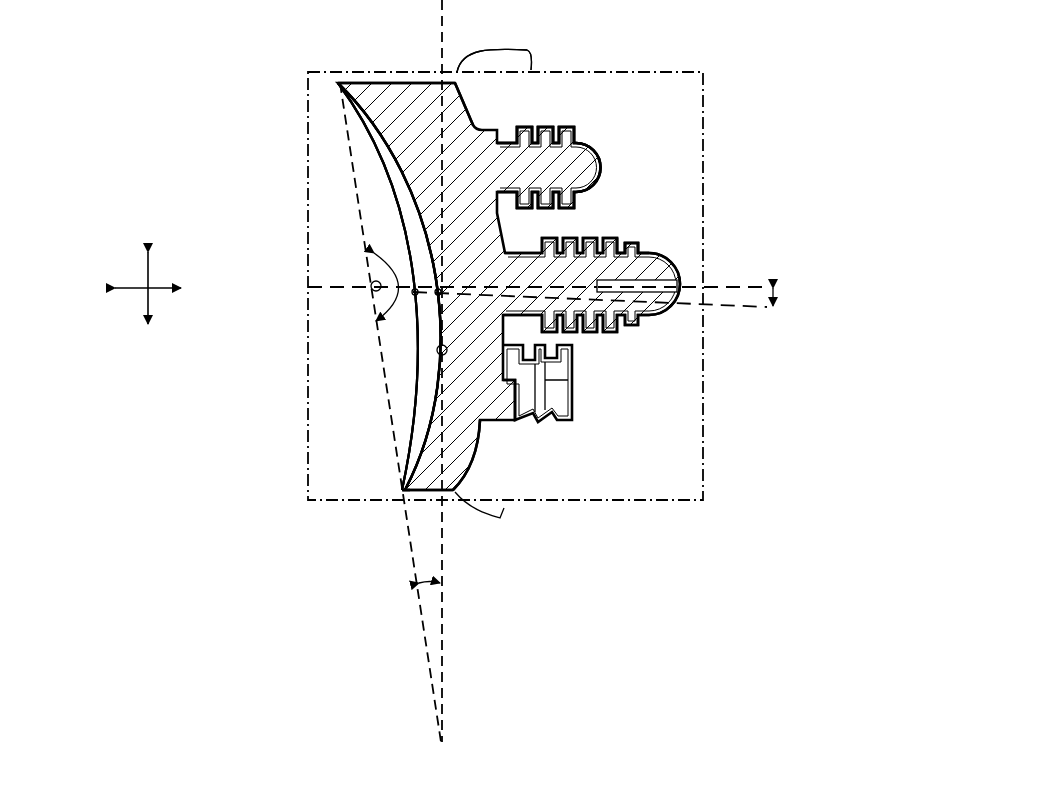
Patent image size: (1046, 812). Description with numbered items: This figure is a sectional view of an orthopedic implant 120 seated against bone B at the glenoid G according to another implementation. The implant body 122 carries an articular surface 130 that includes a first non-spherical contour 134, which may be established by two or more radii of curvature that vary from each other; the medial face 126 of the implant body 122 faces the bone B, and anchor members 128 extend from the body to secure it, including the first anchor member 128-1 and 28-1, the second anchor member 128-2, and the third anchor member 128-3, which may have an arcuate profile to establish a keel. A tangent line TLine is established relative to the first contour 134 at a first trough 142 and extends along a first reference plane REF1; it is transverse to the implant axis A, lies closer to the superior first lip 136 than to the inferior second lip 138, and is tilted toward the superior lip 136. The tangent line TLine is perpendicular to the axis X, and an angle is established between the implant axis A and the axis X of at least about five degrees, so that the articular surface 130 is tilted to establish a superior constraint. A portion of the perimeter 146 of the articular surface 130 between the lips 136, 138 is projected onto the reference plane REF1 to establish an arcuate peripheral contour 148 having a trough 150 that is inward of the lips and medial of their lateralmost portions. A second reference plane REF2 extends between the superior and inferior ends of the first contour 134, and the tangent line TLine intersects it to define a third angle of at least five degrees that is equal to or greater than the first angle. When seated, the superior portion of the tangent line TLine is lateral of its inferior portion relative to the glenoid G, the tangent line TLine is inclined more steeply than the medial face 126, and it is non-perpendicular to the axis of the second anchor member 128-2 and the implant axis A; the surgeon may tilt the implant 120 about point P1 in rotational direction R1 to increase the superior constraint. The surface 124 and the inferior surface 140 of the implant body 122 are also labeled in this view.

The orthopedic implant 120 is at (276, 52).
The implant body 122 is at (390, 88).
The medial surface 124 is at (430, 400).
The medial face 126 is at (478, 450).
The anchor member 128 is at (600, 150).
The first anchor member 128-1 is at (549, 167).
The second anchor member 128-2 is at (657, 317).
The third anchor member 128-3 is at (574, 418).
The first anchor member 28-1 is at (648, 255).
The articular surface 130 is at (389, 286).
The first non-spherical contour 134 is at (406, 185).
The first lip 136 is at (362, 82).
The second lip 138 is at (404, 496).
The inferior surface 140 is at (432, 497).
The first trough 142 is at (437, 350).
The perimeter 146 is at (418, 380).
The arcuate peripheral contour 148 is at (375, 147).
The trough 150 is at (410, 291).
The first reference plane REF1 is at (645, 70).
The second reference plane REF2 is at (432, 675).
The axis X is at (733, 286).
The implant axis A is at (750, 308).
The point P1 is at (371, 283).
The rotational direction R1 is at (396, 262).
The bone B is at (503, 44).
The glenoid G is at (494, 60).
The tangent line TLine is at (452, 124).